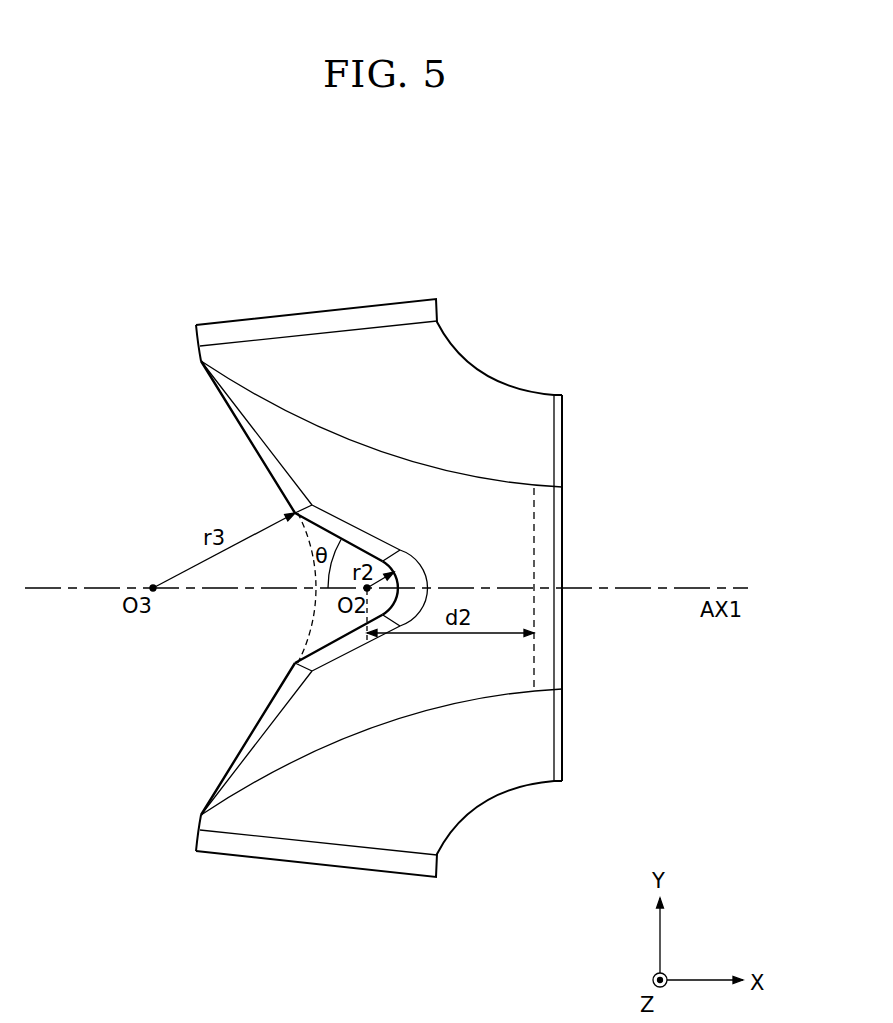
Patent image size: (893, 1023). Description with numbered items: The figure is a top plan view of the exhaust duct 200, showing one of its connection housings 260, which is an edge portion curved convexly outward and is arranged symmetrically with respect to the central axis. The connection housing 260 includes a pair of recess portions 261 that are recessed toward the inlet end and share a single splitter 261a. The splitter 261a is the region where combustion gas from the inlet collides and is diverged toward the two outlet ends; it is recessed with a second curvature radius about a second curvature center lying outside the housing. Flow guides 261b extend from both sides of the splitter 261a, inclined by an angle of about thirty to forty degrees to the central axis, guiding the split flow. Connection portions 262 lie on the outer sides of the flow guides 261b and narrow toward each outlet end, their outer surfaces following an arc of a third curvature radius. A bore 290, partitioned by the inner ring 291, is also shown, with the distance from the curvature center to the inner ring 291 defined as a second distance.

The exhaust duct 200 is at (712, 222).
The connection housing 260 is at (170, 635).
The recess portion 261 is at (393, 535).
The splitter 261a is at (408, 578).
The flow guide 261b is at (338, 527).
The connection portion 262 is at (262, 453).
The bore 290 is at (547, 567).
The inner ring 291 is at (534, 535).